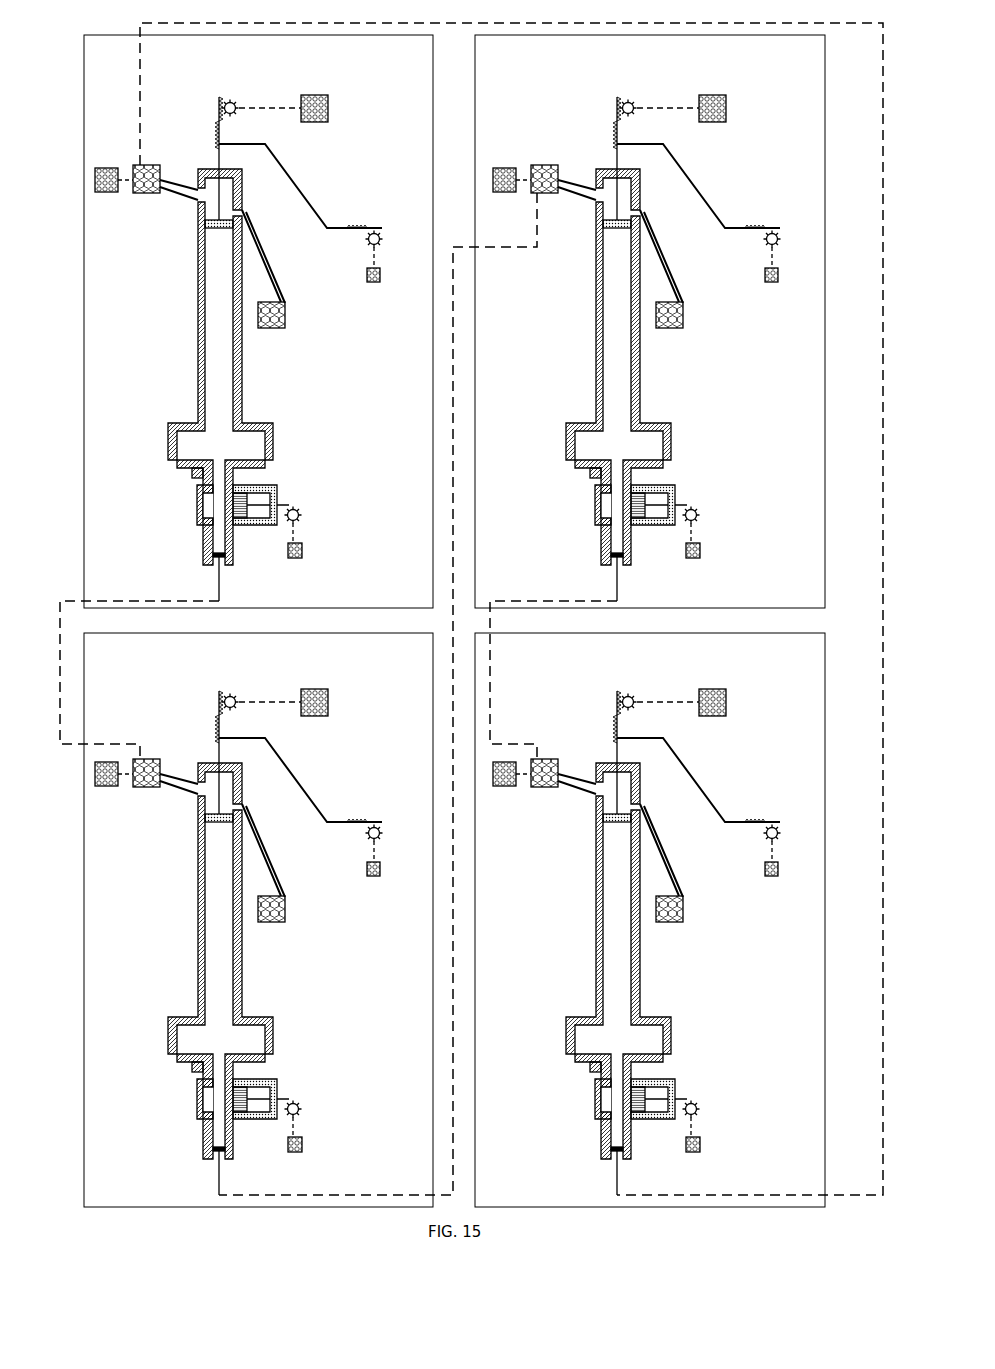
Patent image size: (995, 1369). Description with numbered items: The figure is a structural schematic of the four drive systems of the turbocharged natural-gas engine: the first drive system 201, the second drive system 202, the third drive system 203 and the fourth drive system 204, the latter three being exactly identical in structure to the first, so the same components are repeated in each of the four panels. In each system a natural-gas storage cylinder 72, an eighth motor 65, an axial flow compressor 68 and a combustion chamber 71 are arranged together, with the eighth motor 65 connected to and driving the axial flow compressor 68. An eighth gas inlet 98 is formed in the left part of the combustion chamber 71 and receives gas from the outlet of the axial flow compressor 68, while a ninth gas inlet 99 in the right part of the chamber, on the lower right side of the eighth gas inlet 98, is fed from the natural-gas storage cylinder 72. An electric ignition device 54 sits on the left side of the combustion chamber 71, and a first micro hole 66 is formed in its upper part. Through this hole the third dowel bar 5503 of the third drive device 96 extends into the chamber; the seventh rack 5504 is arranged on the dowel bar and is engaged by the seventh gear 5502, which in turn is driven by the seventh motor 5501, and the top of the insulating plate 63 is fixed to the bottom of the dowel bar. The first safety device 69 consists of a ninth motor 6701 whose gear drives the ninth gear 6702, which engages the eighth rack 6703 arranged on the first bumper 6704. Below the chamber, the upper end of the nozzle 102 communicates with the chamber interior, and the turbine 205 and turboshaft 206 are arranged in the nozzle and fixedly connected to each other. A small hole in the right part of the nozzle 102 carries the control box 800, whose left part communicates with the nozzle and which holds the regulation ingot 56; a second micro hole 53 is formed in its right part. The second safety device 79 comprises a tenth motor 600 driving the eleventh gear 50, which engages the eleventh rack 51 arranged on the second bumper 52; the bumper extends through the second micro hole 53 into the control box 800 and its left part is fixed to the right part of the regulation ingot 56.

The first drive system 201 is at (80, 344).
The second drive system 202 is at (80, 974).
The third drive system 203 is at (826, 374).
The fourth drive system 204 is at (826, 944).
The third drive device 96 is at (158, 78).
The seventh gear 5502 is at (237, 100).
The seventh motor 5501 is at (302, 95).
The seventh rack 5504 is at (218, 127).
The third dowel bar 5503 is at (218, 148).
The first micro hole 66 is at (215, 170).
The axial flow compressor 68 is at (135, 167).
The eighth motor 65 is at (107, 193).
The eighth gas inlet 98 is at (197, 202).
The insulating plate 63 is at (218, 227).
The ninth gas inlet 99 is at (242, 210).
The first safety device 69 is at (367, 146).
The first bumper 6704 is at (338, 228).
The eighth rack 6703 is at (373, 232).
The ninth gear 6702 is at (367, 248).
The ninth motor 6701 is at (370, 283).
The natural-gas storage cylinder 72 is at (283, 328).
The combustion chamber 71 is at (203, 443).
The electric ignition device 54 is at (195, 475).
The nozzle 102 is at (198, 505).
The regulation ingot 56 is at (205, 532).
The turbine 205 is at (212, 565).
The turboshaft 206 is at (220, 587).
The second micro hole 53 is at (250, 500).
The second bumper 52 is at (273, 505).
The eleventh rack 51 is at (302, 507).
The eleventh gear 50 is at (303, 509).
The control box 800 is at (240, 527).
The tenth motor 600 is at (290, 557).
The second safety device 79 is at (335, 559).